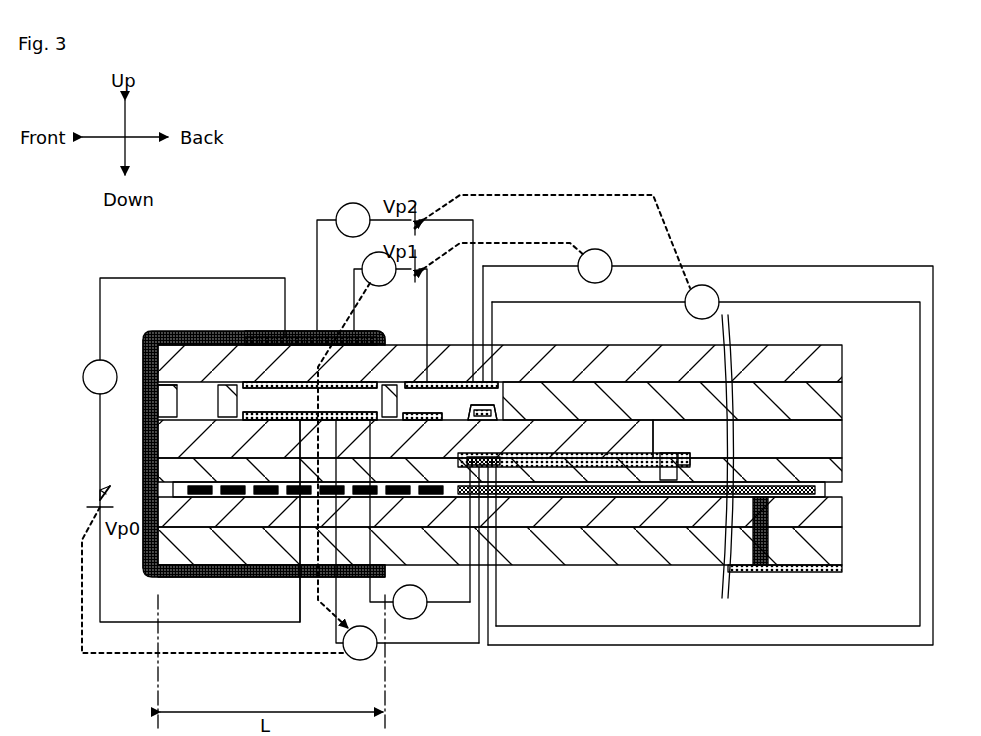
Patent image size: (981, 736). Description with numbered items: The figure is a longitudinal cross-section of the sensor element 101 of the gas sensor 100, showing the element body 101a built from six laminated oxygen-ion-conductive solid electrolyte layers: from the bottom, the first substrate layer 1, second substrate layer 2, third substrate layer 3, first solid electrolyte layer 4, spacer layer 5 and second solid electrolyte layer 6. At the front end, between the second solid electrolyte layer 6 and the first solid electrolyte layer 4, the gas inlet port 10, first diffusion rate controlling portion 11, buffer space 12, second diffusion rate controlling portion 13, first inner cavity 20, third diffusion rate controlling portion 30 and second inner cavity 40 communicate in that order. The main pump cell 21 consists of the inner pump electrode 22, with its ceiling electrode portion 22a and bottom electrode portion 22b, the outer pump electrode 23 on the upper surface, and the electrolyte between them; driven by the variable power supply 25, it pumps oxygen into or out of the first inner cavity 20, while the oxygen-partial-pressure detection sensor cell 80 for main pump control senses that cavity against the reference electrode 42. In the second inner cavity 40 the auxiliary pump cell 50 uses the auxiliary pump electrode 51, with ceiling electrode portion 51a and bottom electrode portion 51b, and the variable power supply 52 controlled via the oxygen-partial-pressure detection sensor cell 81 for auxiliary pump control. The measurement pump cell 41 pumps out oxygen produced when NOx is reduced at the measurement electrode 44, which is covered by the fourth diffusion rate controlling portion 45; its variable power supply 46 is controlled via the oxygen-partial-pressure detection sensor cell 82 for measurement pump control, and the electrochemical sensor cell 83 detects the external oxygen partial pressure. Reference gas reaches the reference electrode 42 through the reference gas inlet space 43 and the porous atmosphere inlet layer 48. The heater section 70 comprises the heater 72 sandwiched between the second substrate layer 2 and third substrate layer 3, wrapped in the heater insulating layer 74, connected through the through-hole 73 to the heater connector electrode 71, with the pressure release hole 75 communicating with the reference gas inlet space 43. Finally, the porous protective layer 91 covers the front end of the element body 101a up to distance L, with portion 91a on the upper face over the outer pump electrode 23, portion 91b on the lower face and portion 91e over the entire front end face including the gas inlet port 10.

The gas sensor 100 is at (835, 123).
The sensor element 101 is at (750, 166).
The element body 101a is at (810, 317).
The first substrate layer 1 is at (842, 545).
The second substrate layer 2 is at (842, 511).
The third substrate layer 3 is at (842, 472).
The first solid electrolyte layer 4 is at (158, 445).
The spacer layer 5 is at (842, 391).
The second solid electrolyte layer 6 is at (842, 361).
The gas inlet port 10 is at (158, 405).
The first diffusion rate controlling portion 11 is at (170, 388).
The buffer space 12 is at (208, 388).
The second diffusion rate controlling portion 13 is at (228, 388).
The first inner cavity 20 is at (344, 400).
The main pump cell 21 is at (201, 277).
The inner pump electrode 22 is at (300, 382).
The ceiling electrode portion 22a is at (328, 382).
The bottom electrode portion 22b is at (290, 412).
The outer pump electrode 23 is at (262, 338).
The variable power supply 25 is at (92, 508).
The third diffusion rate controlling portion 30 is at (388, 385).
The second inner cavity 40 is at (403, 347).
The measurement pump cell 41 is at (337, 214).
The reference electrode 42 is at (489, 454).
The reference gas inlet space 43 is at (841, 442).
The measurement electrode 44 is at (486, 421).
The fourth diffusion rate controlling portion 45 is at (468, 409).
The variable power supply 46 is at (418, 206).
The atmosphere inlet layer 48 is at (664, 454).
The auxiliary pump cell 50 is at (360, 266).
The auxiliary pump electrode 51 is at (450, 383).
The ceiling electrode portion 51a is at (499, 385).
The bottom electrode portion 51b is at (406, 420).
The variable power supply 52 is at (418, 282).
The heater section 70 is at (537, 549).
The heater connector electrode 71 is at (844, 569).
The heater 72 is at (210, 496).
The through-hole 73 is at (765, 565).
The heater insulating layer 74 is at (190, 498).
The pressure release hole 75 is at (677, 452).
The oxygen-partial-pressure detection sensor cell for main pump control 80 is at (393, 651).
The oxygen-partial-pressure detection sensor cell for auxiliary pump control 81 is at (747, 261).
The oxygen-partial-pressure detection sensor cell for measurement pump control 82 is at (747, 297).
The electrochemical sensor cell 83 is at (431, 607).
The porous protective layer 91 is at (133, 312).
The porous protective layer 91a is at (258, 331).
The porous protective layer 91b is at (271, 568).
The porous protective layer 91e is at (143, 451).